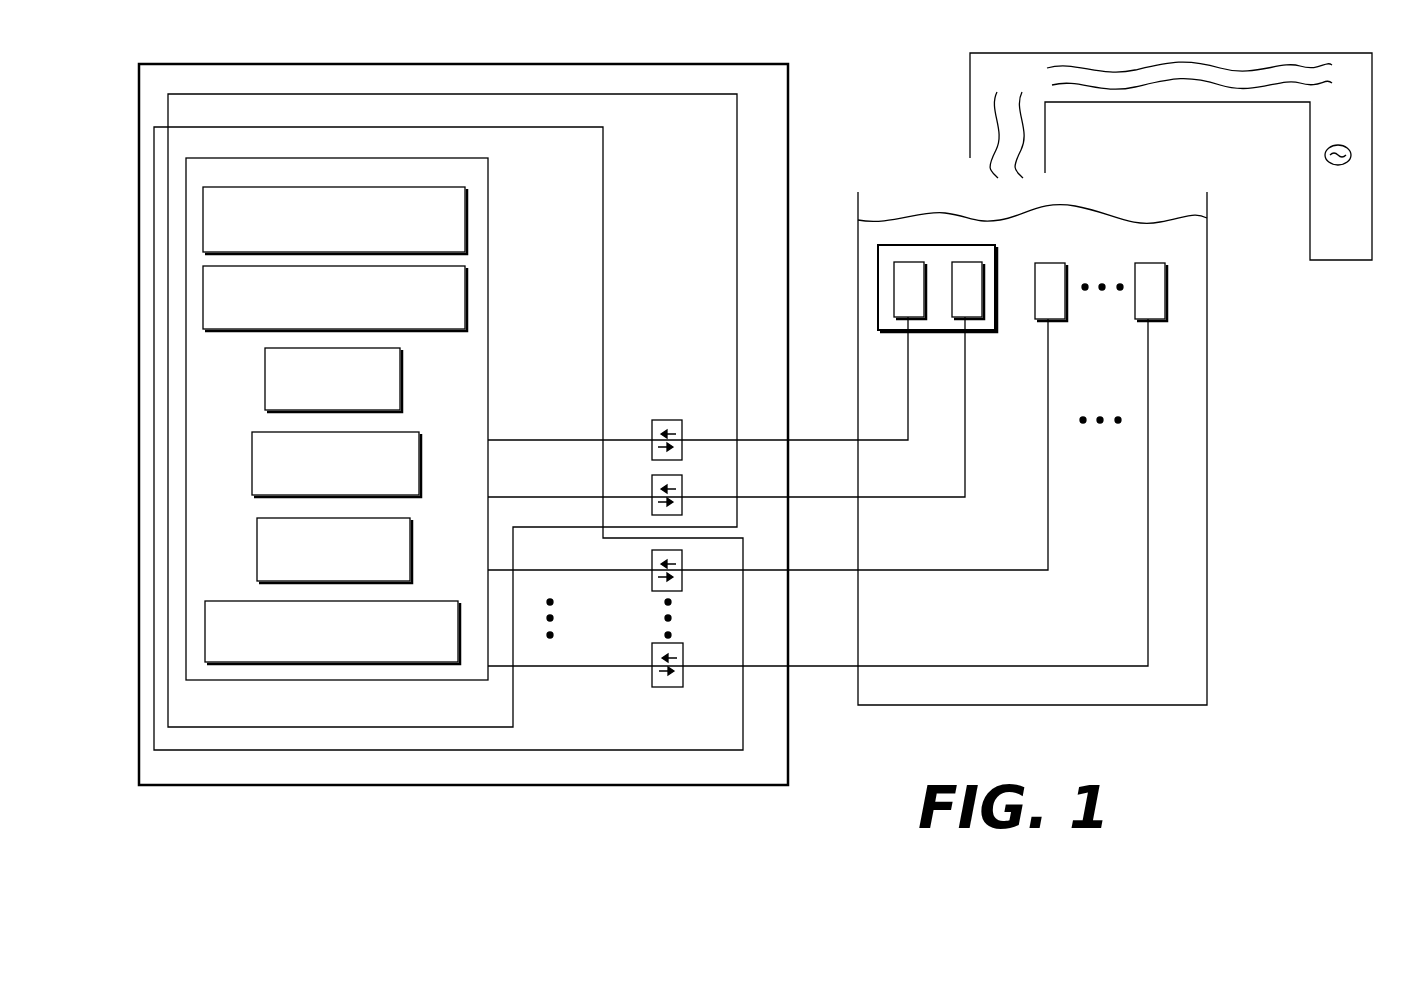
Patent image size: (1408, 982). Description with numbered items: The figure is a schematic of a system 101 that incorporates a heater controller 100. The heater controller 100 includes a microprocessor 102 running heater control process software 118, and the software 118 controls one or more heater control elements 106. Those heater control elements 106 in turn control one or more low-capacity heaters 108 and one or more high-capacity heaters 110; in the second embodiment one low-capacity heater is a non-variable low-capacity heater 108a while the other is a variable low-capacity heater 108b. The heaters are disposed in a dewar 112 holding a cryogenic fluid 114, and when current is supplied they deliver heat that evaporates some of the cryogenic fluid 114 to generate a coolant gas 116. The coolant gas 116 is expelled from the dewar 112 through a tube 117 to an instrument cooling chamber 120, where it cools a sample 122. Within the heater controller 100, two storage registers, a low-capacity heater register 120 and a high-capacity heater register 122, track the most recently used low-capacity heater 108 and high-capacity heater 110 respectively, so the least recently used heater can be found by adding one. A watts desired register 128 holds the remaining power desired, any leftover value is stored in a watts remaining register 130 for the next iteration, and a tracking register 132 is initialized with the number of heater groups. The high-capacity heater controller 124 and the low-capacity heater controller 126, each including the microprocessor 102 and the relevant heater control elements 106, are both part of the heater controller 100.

The heater controller 100 is at (139, 613).
The system 101 is at (126, 503).
The microprocessor 102 is at (488, 205).
The heater control elements 106 is at (655, 420).
The low-capacity heaters 108 is at (977, 286).
The non-variable low-capacity heater 108a is at (905, 262).
The variable low-capacity heater 108b is at (970, 262).
The high-capacity heaters 110 is at (1057, 319).
The dewar 112 is at (1210, 253).
The cryogenic fluid 114 is at (1190, 383).
The coolant gas 116 is at (1035, 147).
The tube 117 is at (1190, 102).
The heater control process software 118 is at (343, 663).
The storage register (low-capacity heater register) / instrument cooling chamber 120 is at (465, 243).
The storage register (high-capacity heater register) / sample 122 is at (465, 310).
The high-capacity heater controller 124 is at (675, 748).
The low-capacity heater controller 126 is at (737, 125).
The watts desired register 128 is at (400, 390).
The watts remaining register 130 is at (419, 458).
The tracking register 132 is at (410, 550).